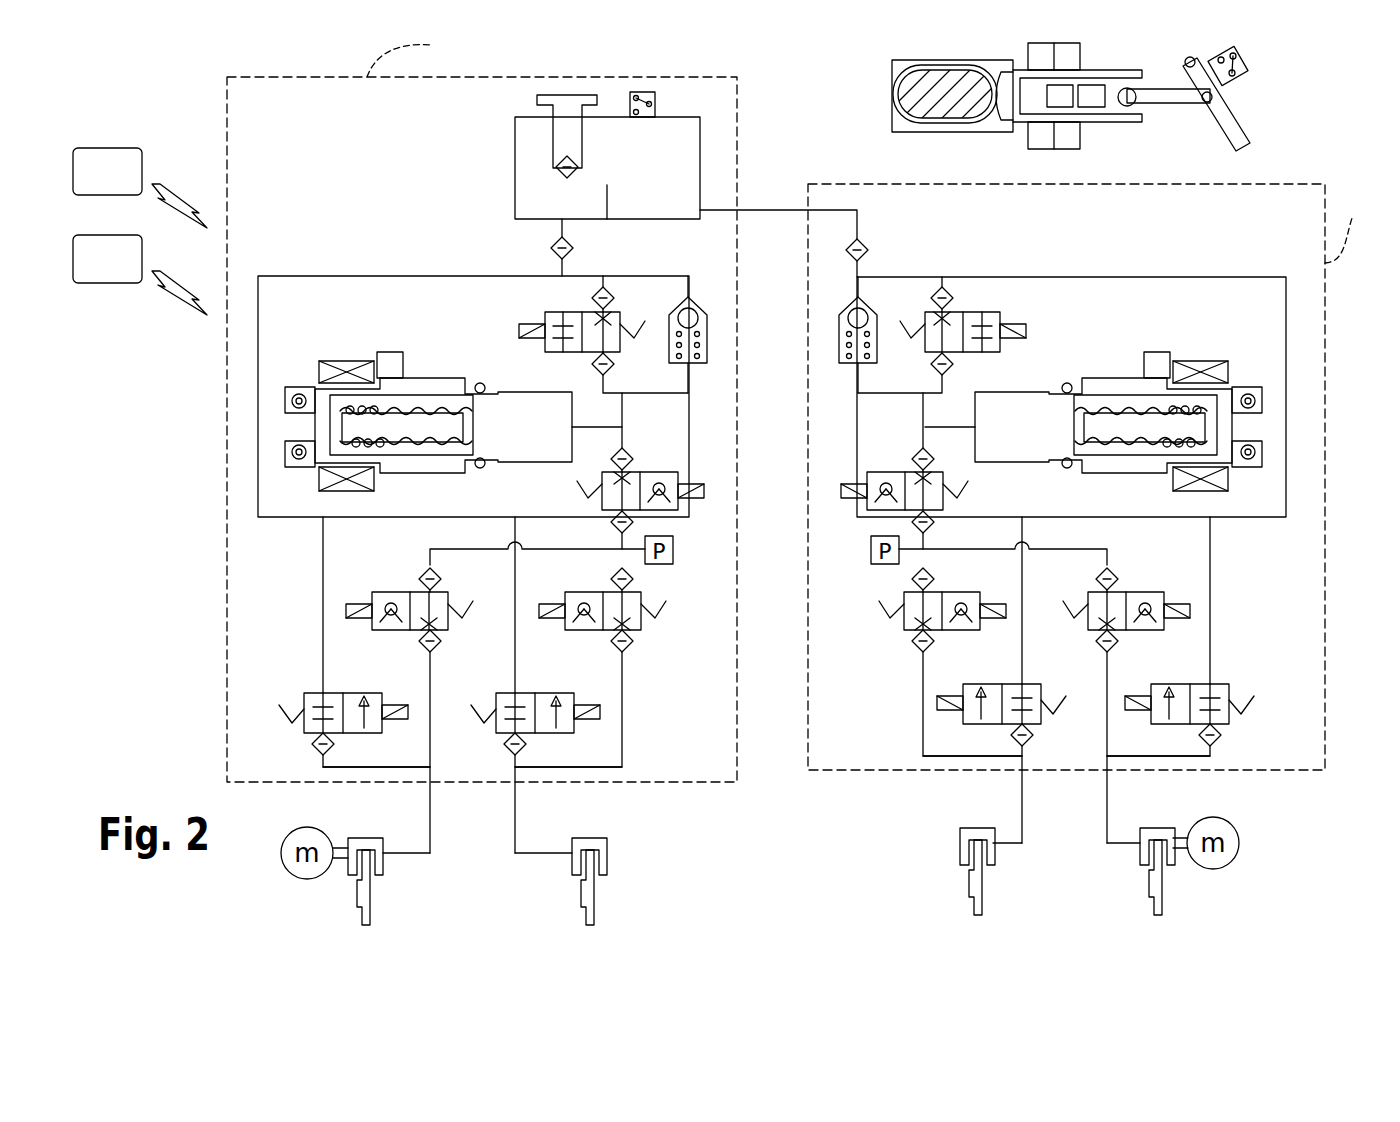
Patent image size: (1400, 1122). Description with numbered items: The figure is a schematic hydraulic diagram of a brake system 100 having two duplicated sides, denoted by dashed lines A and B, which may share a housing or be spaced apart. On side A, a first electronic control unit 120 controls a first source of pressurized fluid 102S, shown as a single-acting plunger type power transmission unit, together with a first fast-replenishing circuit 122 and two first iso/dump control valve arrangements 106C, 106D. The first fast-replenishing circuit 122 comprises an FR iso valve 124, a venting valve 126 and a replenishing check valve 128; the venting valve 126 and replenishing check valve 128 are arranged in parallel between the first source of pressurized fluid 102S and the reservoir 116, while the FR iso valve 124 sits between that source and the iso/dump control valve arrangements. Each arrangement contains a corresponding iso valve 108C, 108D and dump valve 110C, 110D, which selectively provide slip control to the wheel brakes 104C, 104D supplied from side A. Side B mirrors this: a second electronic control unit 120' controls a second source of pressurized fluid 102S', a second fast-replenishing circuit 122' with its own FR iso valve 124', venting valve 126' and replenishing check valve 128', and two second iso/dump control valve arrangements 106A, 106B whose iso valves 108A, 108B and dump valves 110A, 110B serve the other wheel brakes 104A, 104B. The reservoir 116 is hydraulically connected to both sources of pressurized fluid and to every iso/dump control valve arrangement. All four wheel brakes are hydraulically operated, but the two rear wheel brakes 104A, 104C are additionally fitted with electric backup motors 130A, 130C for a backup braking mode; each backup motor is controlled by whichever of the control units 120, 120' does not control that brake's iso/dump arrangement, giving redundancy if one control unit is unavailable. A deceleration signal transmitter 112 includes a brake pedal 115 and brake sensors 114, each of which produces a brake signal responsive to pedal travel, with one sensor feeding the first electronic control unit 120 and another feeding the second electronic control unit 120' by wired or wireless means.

The brake system 100 is at (148, 100).
The first electronic control unit 120 is at (140, 188).
The second electronic control unit 120' is at (140, 275).
The reservoir 116 is at (677, 170).
The first source of pressurized fluid 102S is at (453, 386).
The second source of pressurized fluid 102S' is at (1093, 388).
The first fast-replenishing circuit 122 is at (524, 367).
The second fast-replenishing circuit 122' is at (1020, 397).
The venting valve 126 is at (592, 334).
The venting valve 126' is at (942, 309).
The replenishing check valve 128 is at (729, 333).
The replenishing check valve 128' is at (891, 298).
The FR iso valve 124 is at (646, 471).
The FR iso valve 124' is at (895, 471).
The iso valve 108C is at (416, 591).
The iso valve 108D is at (608, 592).
The iso valve 108B is at (948, 592).
The iso valve 108A is at (1125, 592).
The dump valve 110C is at (348, 693).
The dump valve 110D is at (533, 693).
The dump valve 110B is at (1005, 684).
The dump valve 110A is at (1200, 684).
The first iso/dump control valve arrangement 106C is at (262, 709).
The first iso/dump control valve arrangement 106D is at (648, 719).
The second iso/dump control valve arrangement 106B is at (896, 705).
The second iso/dump control valve arrangement 106A is at (1255, 732).
The wheel brake 104C is at (385, 872).
The wheel brake 104D is at (607, 858).
The wheel brake 104B is at (960, 840).
The wheel brake 104A is at (1140, 856).
The electric backup motor 130C is at (285, 873).
The electric backup motor 130A is at (1238, 858).
The deceleration signal transmitter 112 is at (1230, 33).
The brake sensor 114 is at (1045, 43).
The brake pedal 115 is at (1227, 112).